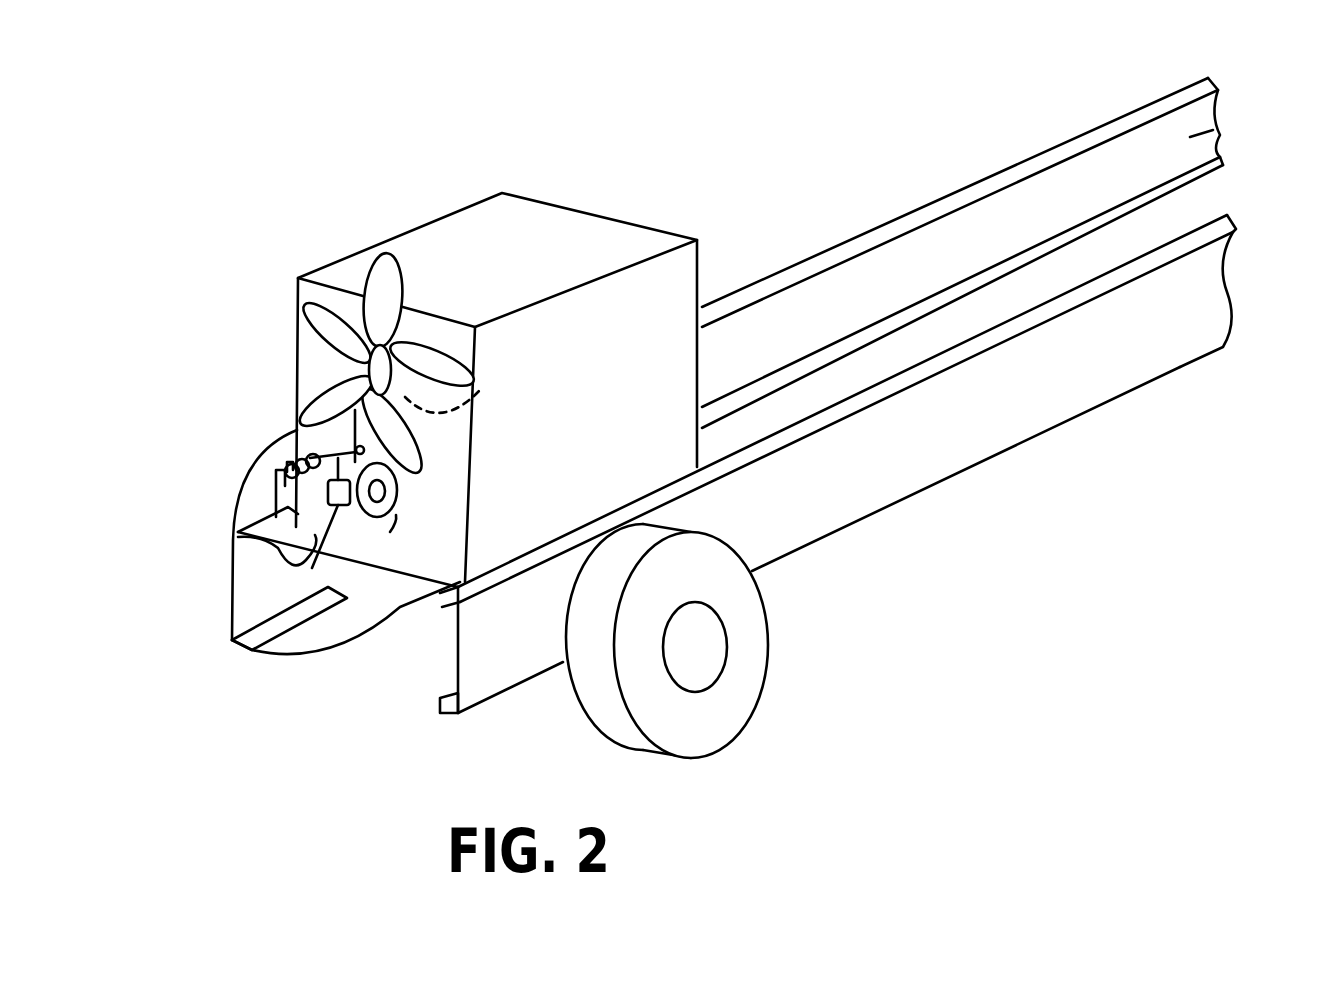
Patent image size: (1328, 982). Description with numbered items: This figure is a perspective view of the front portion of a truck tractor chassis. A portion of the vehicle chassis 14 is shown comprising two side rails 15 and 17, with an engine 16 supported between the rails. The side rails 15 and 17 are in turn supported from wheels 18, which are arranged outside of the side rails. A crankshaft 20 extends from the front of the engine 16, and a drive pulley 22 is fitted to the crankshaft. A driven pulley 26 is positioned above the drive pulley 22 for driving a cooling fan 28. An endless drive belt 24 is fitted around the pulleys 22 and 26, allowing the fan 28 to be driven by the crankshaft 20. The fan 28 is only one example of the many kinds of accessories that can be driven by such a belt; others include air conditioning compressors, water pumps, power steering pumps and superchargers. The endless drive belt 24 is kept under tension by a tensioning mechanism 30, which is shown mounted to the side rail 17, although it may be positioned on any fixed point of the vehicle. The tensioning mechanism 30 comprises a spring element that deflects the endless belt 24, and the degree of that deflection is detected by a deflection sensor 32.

The vehicle chassis 14 is at (996, 152).
The side rail 15 is at (1110, 373).
The engine 16 is at (560, 228).
The side rail 17 is at (1190, 137).
The wheels 18 is at (752, 637).
The crankshaft 20 is at (397, 495).
The drive pulley 22 is at (390, 532).
The endless drive belt 24 is at (472, 396).
The driven pulley 26 is at (420, 325).
The cooling fan 28 is at (398, 300).
The tensioning mechanism 30 is at (228, 427).
The deflection sensor 32 is at (237, 540).